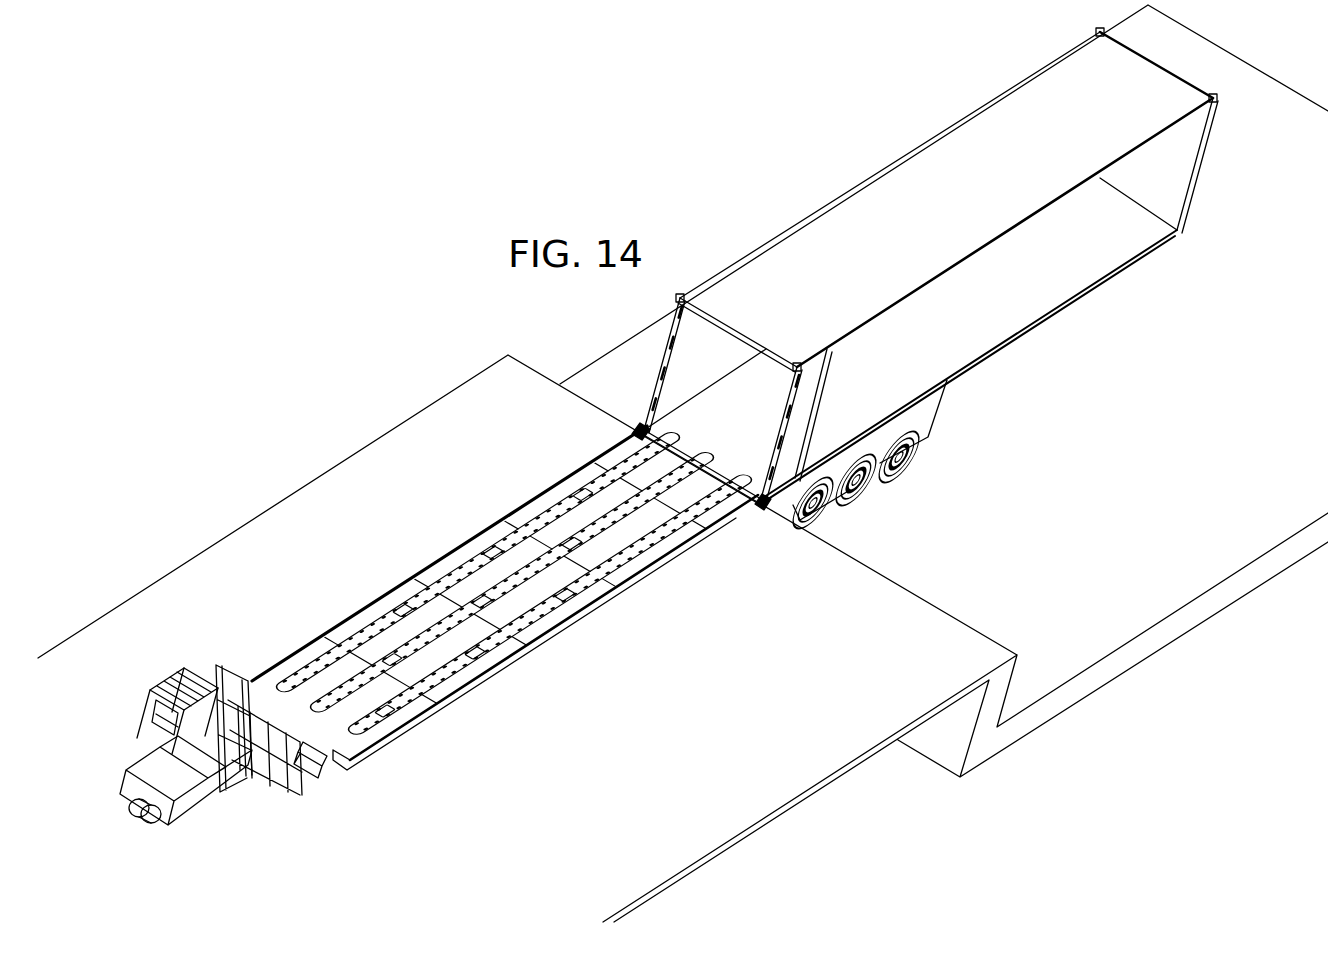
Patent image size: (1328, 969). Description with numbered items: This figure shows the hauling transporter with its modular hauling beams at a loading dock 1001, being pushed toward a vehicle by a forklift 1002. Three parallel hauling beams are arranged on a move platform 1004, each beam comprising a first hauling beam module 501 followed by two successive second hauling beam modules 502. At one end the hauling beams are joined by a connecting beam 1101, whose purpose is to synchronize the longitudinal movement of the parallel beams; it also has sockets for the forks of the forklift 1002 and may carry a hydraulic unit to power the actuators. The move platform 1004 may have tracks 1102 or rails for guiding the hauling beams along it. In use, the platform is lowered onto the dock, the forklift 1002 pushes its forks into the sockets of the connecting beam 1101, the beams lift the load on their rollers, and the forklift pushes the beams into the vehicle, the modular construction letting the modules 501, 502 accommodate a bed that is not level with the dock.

The loading dock 1001 is at (683, 638).
The forklift 1002 is at (152, 686).
The move platform 1004 is at (360, 608).
The first hauling beam module 501 is at (358, 730).
The second hauling beam module 502 is at (660, 536).
The connecting beam 1101 is at (313, 774).
The tracks 1102 is at (636, 432).